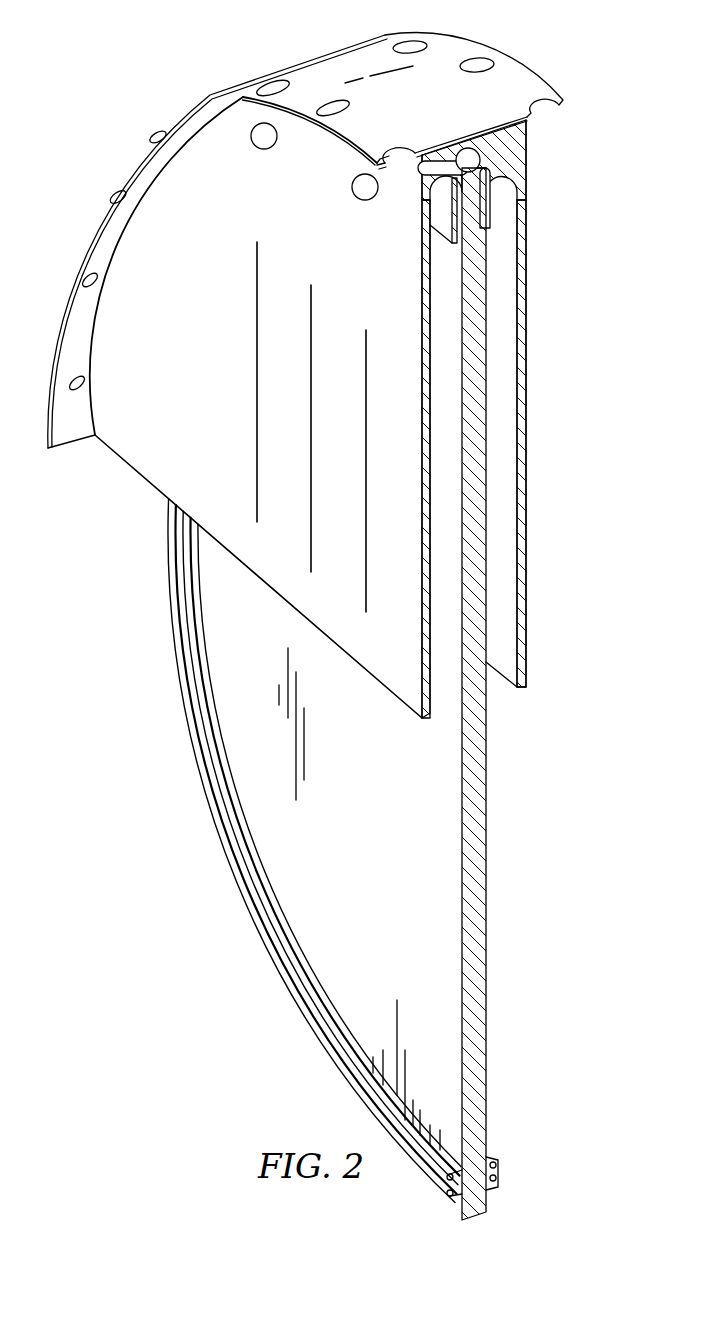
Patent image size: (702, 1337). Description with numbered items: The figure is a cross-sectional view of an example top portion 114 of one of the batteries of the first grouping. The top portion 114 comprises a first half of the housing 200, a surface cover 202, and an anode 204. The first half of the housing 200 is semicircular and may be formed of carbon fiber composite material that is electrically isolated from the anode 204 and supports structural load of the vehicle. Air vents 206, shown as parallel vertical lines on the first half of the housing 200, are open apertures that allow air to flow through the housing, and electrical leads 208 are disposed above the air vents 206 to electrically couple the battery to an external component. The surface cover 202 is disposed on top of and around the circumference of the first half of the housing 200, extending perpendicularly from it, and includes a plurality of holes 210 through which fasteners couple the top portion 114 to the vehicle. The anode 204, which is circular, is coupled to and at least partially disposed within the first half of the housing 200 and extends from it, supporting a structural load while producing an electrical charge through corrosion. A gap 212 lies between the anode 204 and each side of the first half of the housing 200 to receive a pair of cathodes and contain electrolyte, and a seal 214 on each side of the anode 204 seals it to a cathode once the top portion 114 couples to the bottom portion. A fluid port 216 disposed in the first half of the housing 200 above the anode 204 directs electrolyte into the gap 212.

The top portion 114 is at (165, 789).
The first half of the housing 200 is at (180, 240).
The surface cover 202 is at (340, 65).
The anode 204 is at (475, 852).
The air vents 206 is at (313, 398).
The electrical leads 208 is at (253, 143).
The holes 210 is at (320, 104).
The gap 212 is at (503, 694).
The seal 214 is at (303, 998).
The fluid port 216 is at (493, 160).